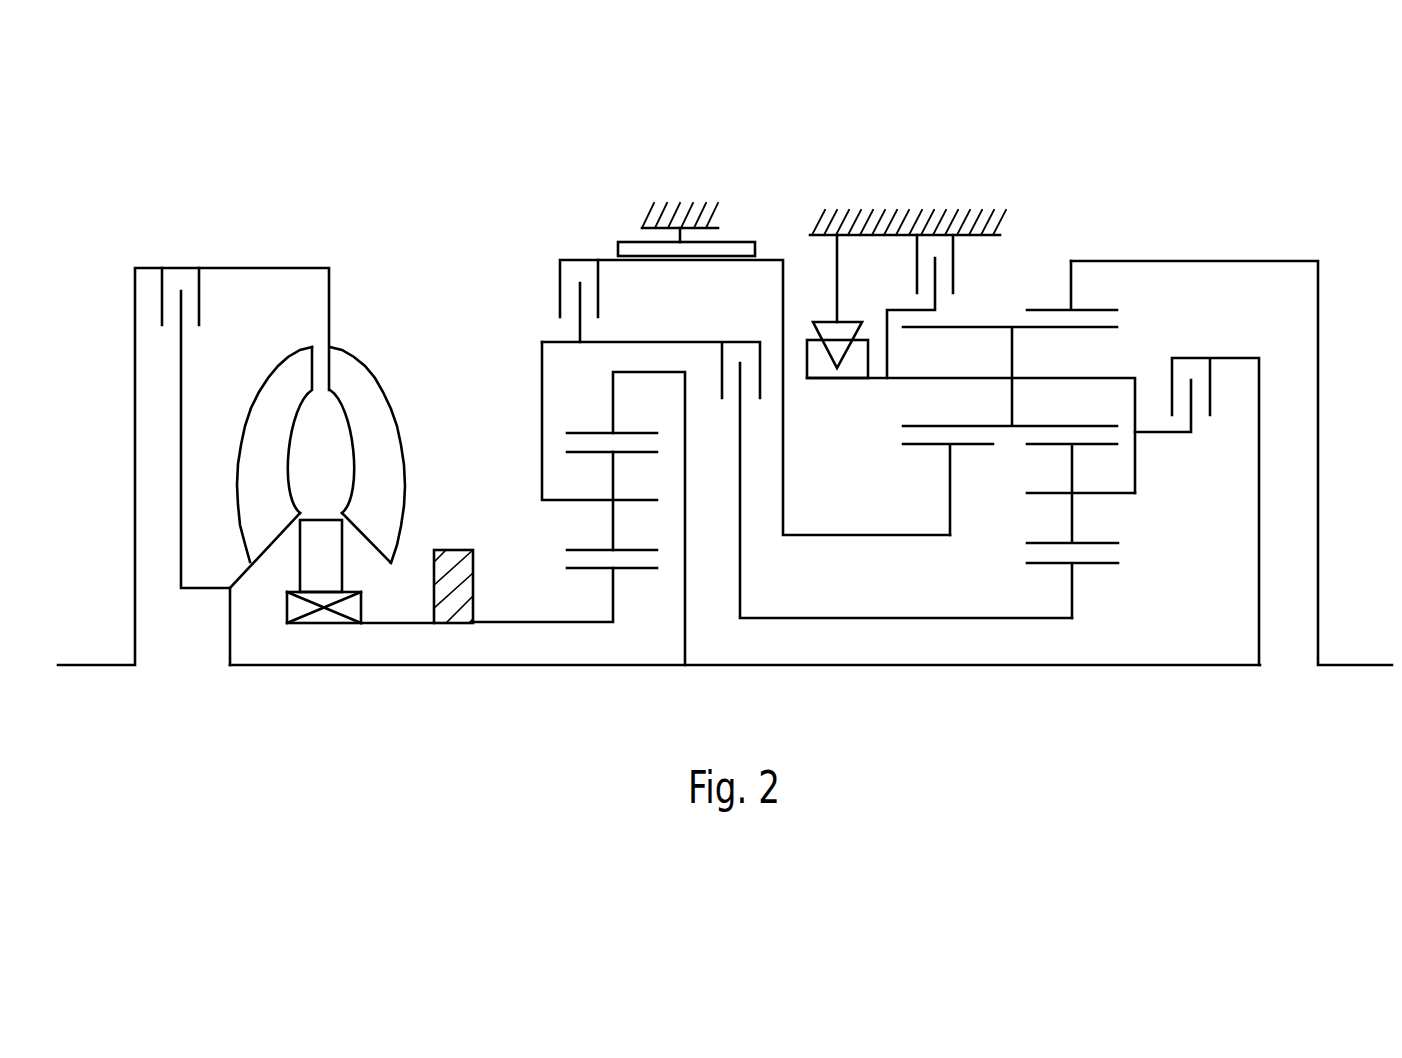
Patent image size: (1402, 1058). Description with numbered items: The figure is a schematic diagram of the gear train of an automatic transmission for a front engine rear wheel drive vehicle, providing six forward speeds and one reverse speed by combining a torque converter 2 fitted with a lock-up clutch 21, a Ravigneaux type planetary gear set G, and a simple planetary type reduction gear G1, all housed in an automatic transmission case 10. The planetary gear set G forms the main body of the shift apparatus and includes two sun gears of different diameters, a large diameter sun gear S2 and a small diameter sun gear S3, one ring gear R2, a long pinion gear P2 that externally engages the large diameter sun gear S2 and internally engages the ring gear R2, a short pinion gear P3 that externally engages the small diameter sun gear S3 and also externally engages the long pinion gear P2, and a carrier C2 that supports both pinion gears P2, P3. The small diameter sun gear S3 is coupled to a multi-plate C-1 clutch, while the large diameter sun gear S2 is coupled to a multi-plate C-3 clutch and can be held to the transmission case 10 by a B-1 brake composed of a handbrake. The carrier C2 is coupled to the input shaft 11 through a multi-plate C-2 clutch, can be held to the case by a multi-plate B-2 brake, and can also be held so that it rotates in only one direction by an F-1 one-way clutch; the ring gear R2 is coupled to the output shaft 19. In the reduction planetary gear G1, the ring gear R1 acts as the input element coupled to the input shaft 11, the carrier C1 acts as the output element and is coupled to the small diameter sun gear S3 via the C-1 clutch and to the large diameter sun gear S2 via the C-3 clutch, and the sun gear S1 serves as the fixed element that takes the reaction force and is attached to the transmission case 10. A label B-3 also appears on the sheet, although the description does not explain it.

The torque converter 2 is at (266, 268).
The lock-up clutch 21 is at (199, 306).
The automatic transmission case 10 is at (473, 583).
The input shaft 11 is at (579, 667).
The output shaft 19 is at (1352, 667).
The B-1 brake B-1 is at (686, 212).
The B-2 brake B-2 is at (920, 277).
The third brake B-3 is at (1047, 148).
The F-1 one-way clutch F-1 is at (837, 326).
The C-1 clutch C-1 is at (807, 462).
The C-2 clutch C-2 is at (1197, 495).
The C-3 clutch C-3 is at (755, 397).
The simple planetary type reduction gear G1 is at (507, 480).
The ring gear R1 is at (628, 433).
The carrier C1 is at (573, 500).
The sun gear S1 is at (590, 570).
The Ravigneaux type planetary gear set G is at (985, 538).
The ring gear R2 is at (1053, 308).
The long pinion gear P2 is at (950, 327).
The carrier C2 is at (918, 378).
The large diameter sun gear S2 is at (921, 446).
The short pinion gear P3 is at (1108, 541).
The small diameter sun gear S3 is at (1042, 565).